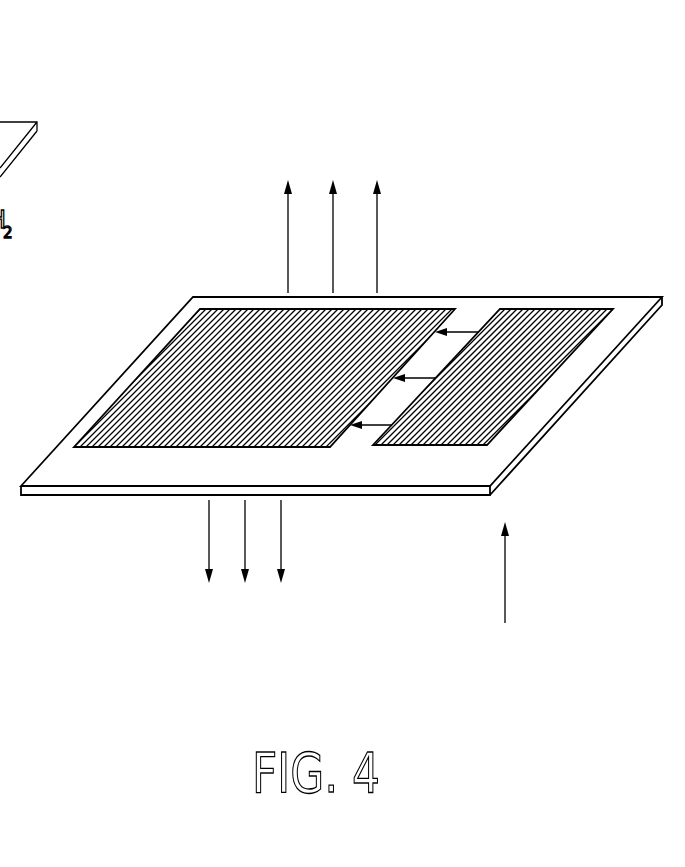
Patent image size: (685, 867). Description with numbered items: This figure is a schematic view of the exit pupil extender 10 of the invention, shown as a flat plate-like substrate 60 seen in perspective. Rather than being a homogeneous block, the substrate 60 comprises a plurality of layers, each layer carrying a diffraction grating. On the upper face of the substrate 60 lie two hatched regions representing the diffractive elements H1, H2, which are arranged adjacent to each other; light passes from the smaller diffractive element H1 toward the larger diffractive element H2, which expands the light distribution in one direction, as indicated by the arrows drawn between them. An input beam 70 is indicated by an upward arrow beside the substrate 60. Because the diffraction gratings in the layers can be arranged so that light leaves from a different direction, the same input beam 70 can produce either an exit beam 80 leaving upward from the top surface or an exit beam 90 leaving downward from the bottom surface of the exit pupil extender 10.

The exit pupil extender 10 is at (342, 372).
The substrate 60 is at (175, 325).
The input beam 70 is at (512, 582).
The exit beam 80 is at (382, 170).
The exit beam 90 is at (292, 593).
The diffractive element H1 is at (417, 446).
The diffractive element H2 is at (228, 448).